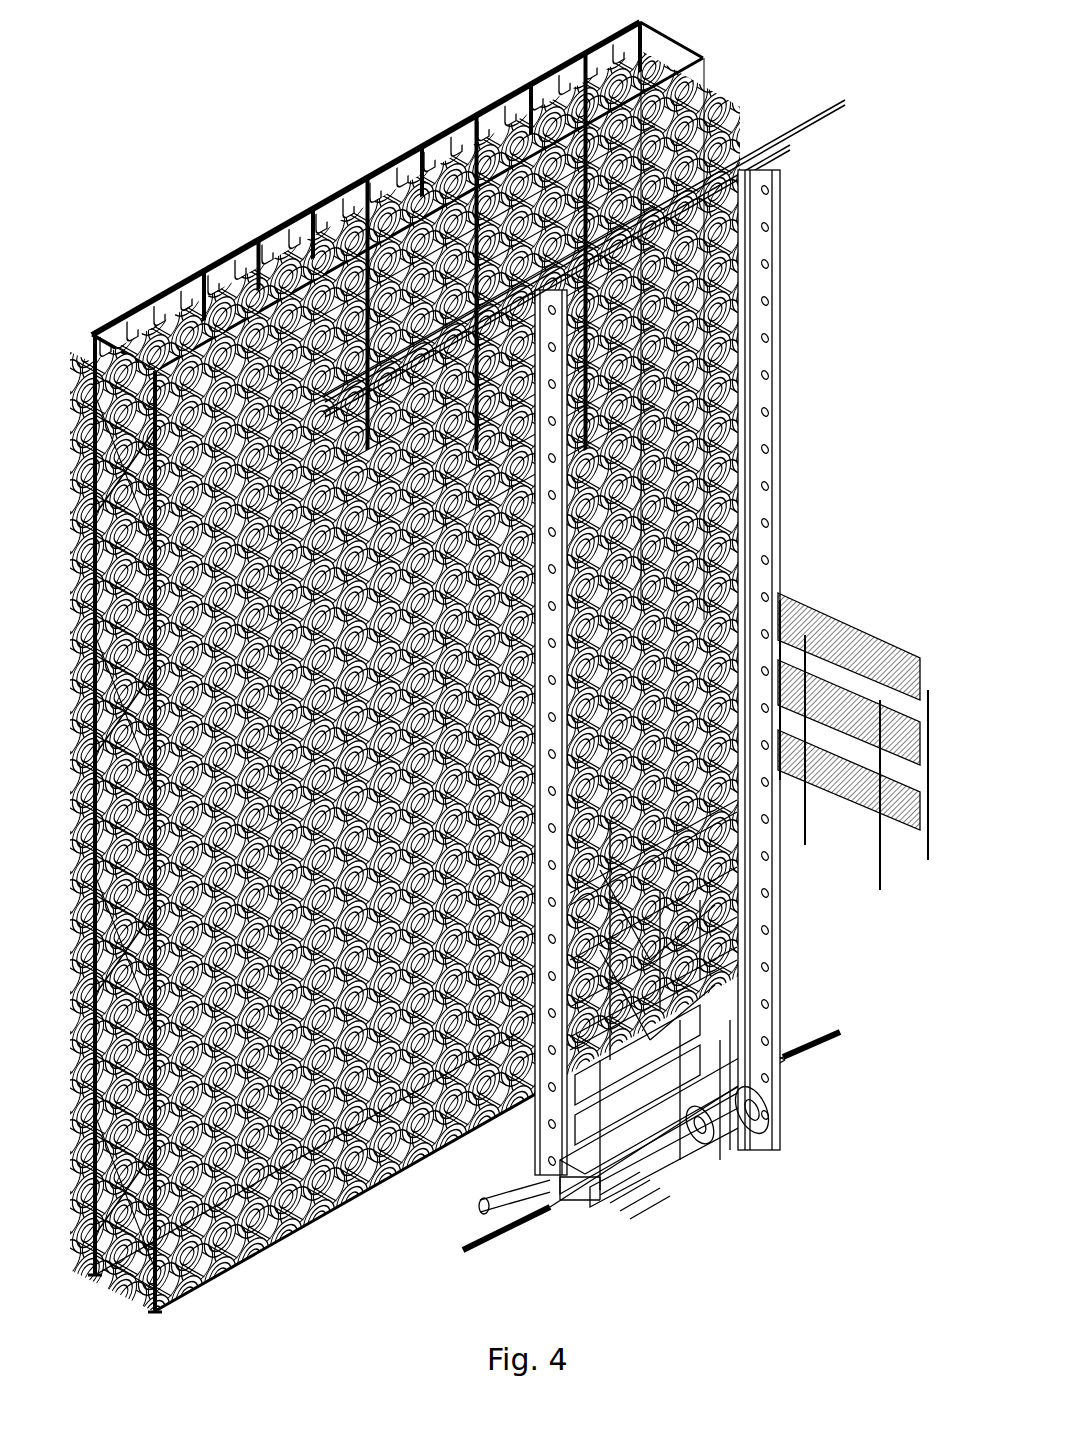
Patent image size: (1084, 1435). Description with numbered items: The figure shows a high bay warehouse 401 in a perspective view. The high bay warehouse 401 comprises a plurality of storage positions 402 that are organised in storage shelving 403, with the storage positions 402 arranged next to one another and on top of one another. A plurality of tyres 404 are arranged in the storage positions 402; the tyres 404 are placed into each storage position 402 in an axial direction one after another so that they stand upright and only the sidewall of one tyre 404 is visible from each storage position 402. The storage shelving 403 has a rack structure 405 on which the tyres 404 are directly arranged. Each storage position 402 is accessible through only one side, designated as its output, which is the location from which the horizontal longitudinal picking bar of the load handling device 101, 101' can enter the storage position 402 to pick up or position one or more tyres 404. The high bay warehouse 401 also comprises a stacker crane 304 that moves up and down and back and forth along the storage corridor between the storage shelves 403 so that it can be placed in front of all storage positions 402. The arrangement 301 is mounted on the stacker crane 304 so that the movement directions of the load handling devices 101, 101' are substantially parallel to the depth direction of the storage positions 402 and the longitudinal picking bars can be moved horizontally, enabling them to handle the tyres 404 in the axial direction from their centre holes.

The high bay warehouse 401 is at (240, 136).
The storage position 402 is at (180, 320).
The storage shelving 403 is at (487, 110).
The tyre 404 is at (443, 1123).
The rack structure 405 is at (296, 1218).
The arrangement 301 is at (777, 1213).
The stacker crane 304 is at (762, 333).
The load handling device 101 is at (683, 1211).
The load handling device 101' is at (843, 1158).